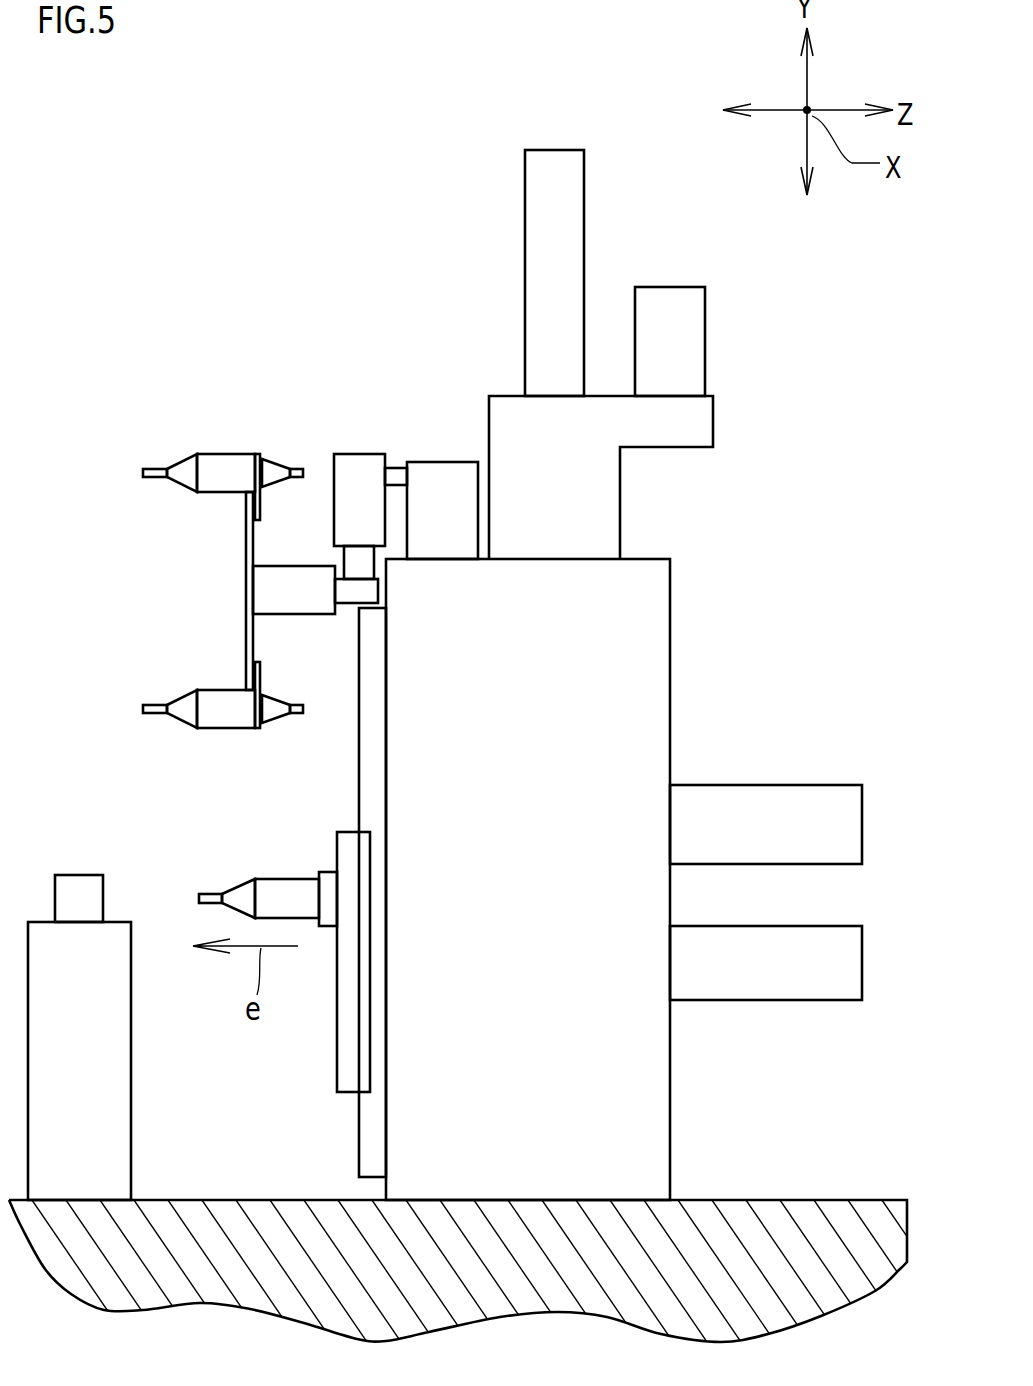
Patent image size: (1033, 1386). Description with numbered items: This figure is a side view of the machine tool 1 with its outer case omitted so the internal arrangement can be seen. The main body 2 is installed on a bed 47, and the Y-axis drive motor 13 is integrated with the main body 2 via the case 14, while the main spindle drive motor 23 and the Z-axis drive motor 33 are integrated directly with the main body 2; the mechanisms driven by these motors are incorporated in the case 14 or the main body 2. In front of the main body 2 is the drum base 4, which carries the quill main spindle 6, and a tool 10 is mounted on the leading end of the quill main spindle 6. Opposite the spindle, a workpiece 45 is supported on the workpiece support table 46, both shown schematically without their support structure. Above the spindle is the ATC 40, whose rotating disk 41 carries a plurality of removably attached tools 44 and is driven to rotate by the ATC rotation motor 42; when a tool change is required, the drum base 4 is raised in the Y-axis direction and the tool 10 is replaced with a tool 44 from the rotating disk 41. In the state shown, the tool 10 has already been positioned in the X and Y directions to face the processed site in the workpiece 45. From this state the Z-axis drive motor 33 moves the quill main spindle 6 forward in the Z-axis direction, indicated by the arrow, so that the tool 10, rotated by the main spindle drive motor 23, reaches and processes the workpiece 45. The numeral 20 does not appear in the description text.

The machine tool 1 is at (645, 675).
The main body 2 is at (670, 618).
The drum base 4 is at (337, 1062).
The quill main spindle 6 is at (330, 872).
The tool 10 is at (255, 879).
The Y-axis drive motor 13 is at (705, 341).
The case 14 is at (497, 396).
The tool 20 is at (320, 428).
The main spindle drive motor 23 is at (808, 785).
The Z-axis drive motor 33 is at (808, 926).
The ATC 40 is at (228, 525).
The rotating disk 41 is at (246, 602).
The ATC rotation motor 42 is at (358, 455).
The tool 44 is at (220, 688).
The workpiece 45 is at (103, 887).
The workpiece support table 46 is at (131, 1146).
The bed 47 is at (800, 1200).